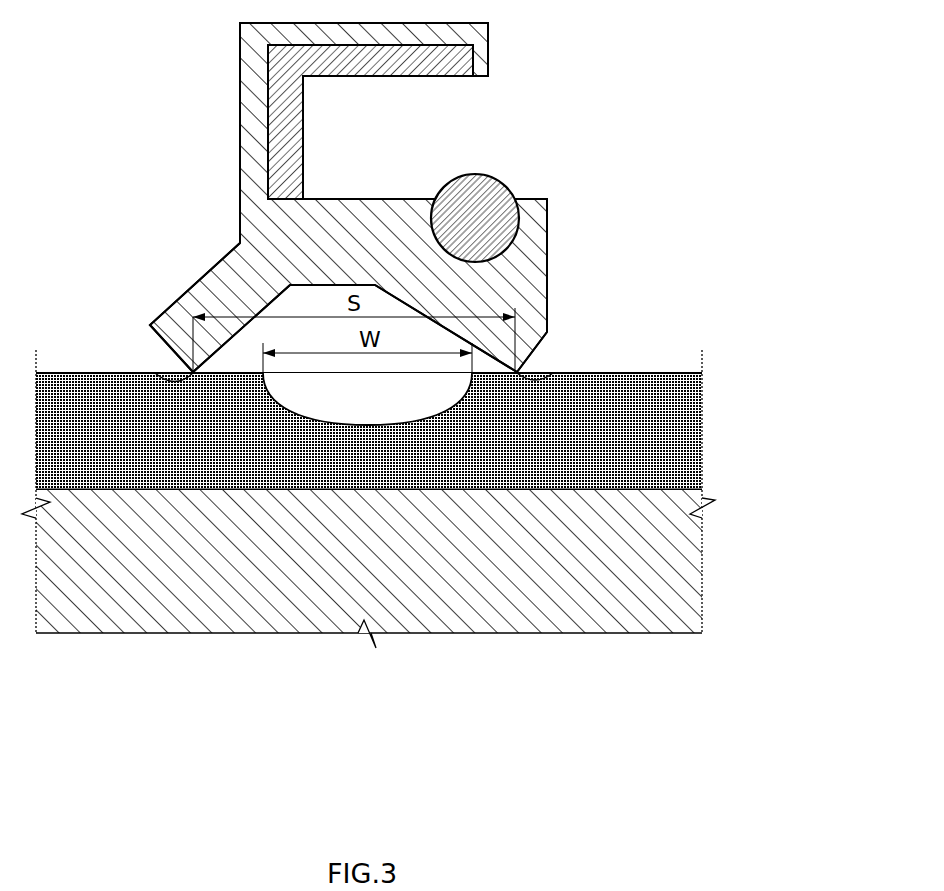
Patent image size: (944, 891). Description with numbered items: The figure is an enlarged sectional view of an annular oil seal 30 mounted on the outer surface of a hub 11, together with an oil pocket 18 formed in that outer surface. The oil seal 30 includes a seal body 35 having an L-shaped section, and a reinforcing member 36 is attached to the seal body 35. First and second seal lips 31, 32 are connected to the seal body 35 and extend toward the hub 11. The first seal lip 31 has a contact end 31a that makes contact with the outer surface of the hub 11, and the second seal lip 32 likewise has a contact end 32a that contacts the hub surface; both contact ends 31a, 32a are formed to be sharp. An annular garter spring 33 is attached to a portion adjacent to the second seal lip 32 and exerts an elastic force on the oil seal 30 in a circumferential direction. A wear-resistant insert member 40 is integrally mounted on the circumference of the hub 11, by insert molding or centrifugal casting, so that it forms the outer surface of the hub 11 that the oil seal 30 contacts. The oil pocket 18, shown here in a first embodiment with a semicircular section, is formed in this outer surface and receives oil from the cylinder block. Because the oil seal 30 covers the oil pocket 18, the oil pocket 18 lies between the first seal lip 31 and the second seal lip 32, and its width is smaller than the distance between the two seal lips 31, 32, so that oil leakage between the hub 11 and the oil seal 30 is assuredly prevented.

The oil seal 30 is at (559, 103).
The seal body 35 is at (253, 105).
The reinforcing member 36 is at (403, 62).
The garter spring 33 is at (494, 193).
The first seal lip 31 is at (160, 340).
The second seal lip 32 is at (533, 351).
The contact end 31a is at (153, 373).
The contact end 32a is at (553, 372).
The oil pocket 18 is at (408, 422).
The wear-resistant insert member 40 is at (692, 432).
The hub 11 is at (557, 615).